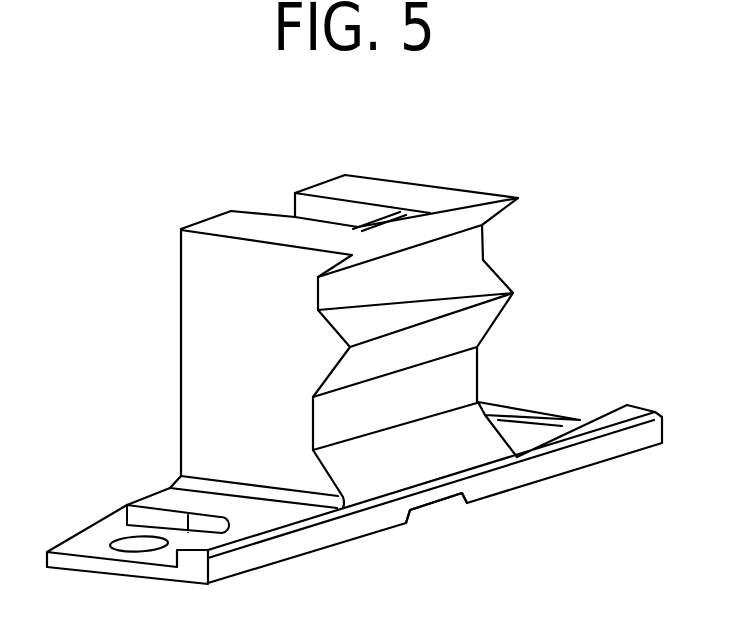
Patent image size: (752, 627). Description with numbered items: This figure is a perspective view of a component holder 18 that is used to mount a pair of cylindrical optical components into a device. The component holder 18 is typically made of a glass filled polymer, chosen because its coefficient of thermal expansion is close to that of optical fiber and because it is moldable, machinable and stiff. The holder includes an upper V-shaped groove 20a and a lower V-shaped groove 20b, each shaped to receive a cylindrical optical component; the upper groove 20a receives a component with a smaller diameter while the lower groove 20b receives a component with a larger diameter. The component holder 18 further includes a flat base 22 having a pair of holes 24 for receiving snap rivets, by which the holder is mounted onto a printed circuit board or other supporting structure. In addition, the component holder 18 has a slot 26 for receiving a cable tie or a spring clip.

The component holder 18 is at (462, 150).
The upper V-shaped groove 20a is at (500, 272).
The lower V-shaped groove 20b is at (487, 402).
The flat base 22 is at (622, 462).
The holes 24 is at (132, 541).
The slot 26 is at (282, 212).